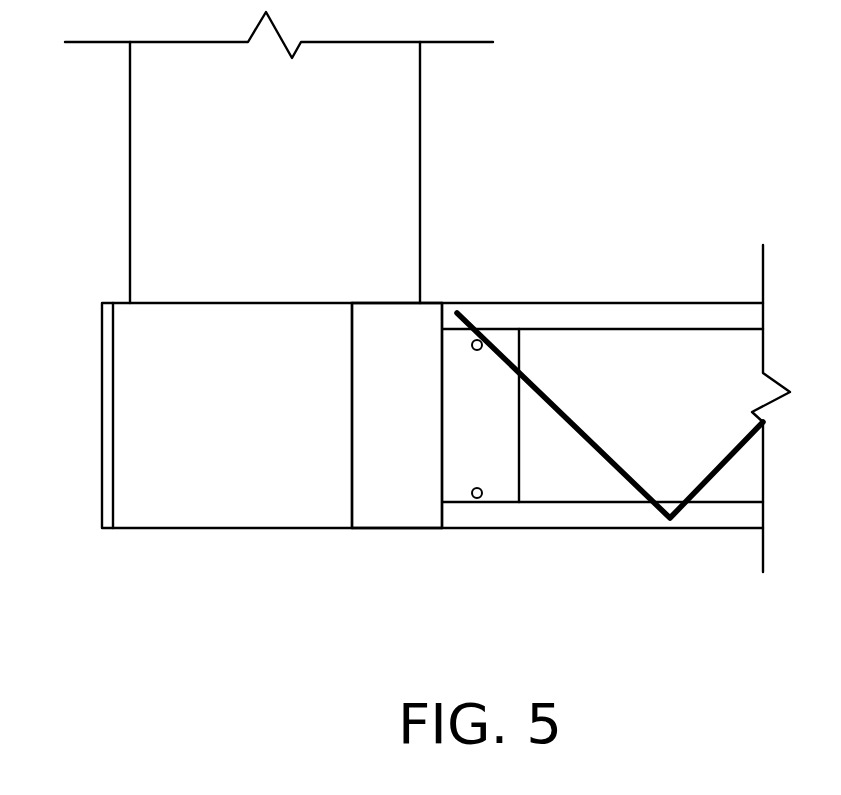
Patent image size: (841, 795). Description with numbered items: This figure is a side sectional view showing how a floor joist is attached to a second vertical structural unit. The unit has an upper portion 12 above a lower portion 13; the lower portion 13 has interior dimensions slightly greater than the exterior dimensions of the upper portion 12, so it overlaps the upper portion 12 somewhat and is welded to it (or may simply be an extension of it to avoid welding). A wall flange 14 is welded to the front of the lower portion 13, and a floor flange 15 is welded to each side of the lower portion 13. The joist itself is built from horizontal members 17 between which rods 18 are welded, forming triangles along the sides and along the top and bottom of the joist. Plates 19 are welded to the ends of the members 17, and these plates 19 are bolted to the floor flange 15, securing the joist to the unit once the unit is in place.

The upper portion 12 is at (420, 131).
The lower portion 13 is at (162, 363).
The wall flange 14 is at (104, 431).
The floor flange 15 is at (402, 507).
The horizontal member 17 is at (727, 310).
The rod 18 is at (740, 443).
The plate 19 is at (500, 340).